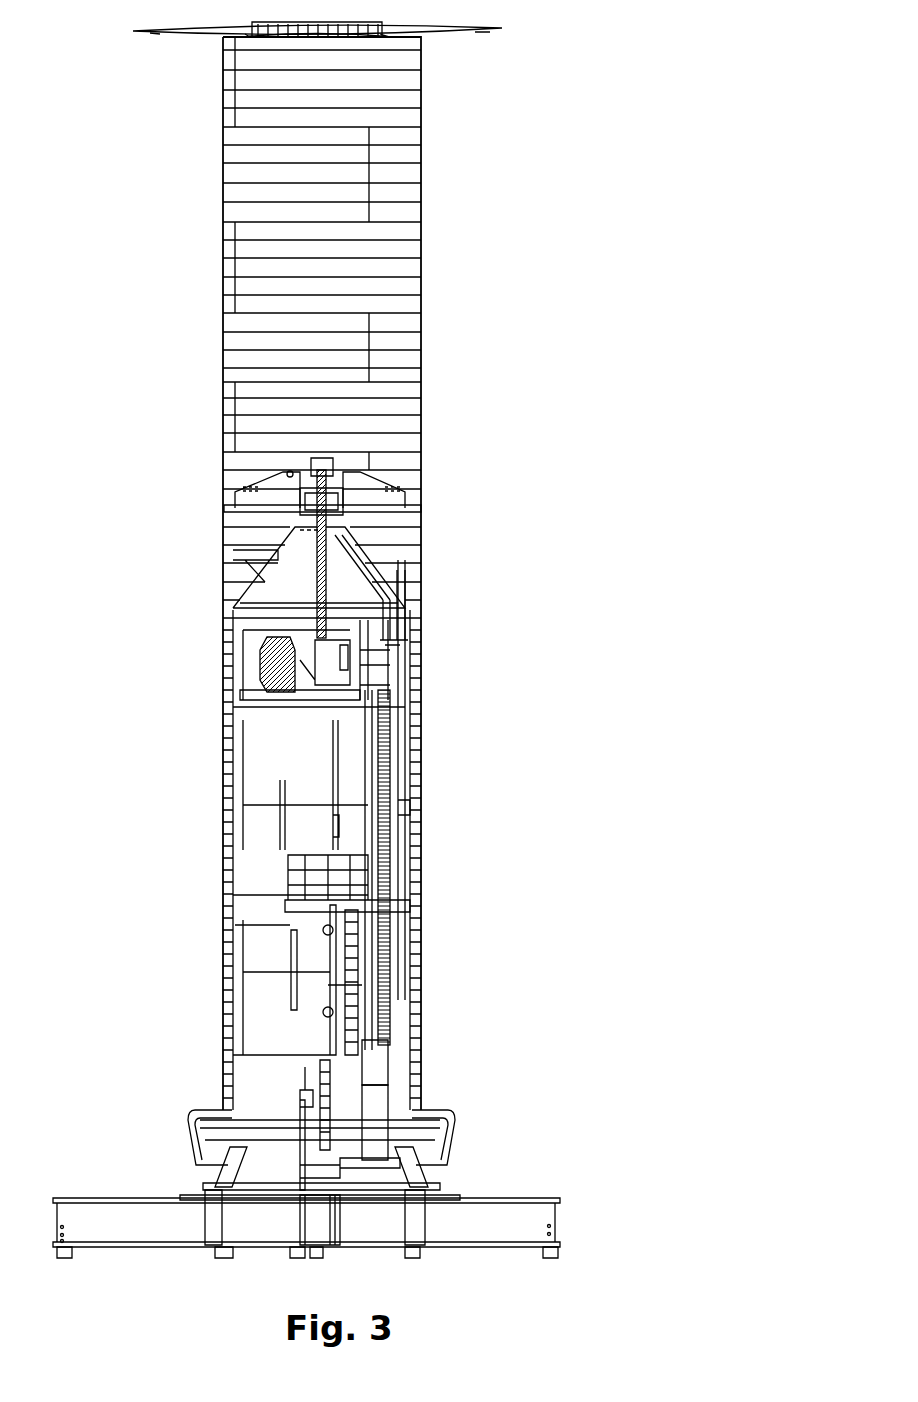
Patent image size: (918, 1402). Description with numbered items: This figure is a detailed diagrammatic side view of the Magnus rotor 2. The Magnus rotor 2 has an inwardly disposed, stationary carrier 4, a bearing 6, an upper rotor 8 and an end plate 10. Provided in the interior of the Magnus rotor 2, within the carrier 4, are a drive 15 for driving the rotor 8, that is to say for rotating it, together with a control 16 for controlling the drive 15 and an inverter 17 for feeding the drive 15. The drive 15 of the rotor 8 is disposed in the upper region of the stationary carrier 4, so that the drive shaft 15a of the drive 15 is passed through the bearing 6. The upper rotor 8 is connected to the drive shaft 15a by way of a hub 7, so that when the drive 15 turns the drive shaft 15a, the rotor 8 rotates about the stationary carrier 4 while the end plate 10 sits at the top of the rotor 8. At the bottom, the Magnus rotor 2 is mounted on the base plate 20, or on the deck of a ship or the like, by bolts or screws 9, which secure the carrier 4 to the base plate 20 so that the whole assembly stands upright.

The Magnus rotor 2 is at (108, 268).
The rotor 8 is at (390, 232).
The end plate 10 is at (455, 37).
The hub 7 is at (265, 492).
The bearing 6 is at (377, 473).
The drive shaft 15a is at (330, 593).
The drive 15 is at (258, 670).
The carrier 4 is at (270, 875).
The inverter 17 is at (370, 1058).
The control 16 is at (372, 1112).
The bolts or screws 9 is at (200, 1181).
The base plate 20 is at (513, 1217).